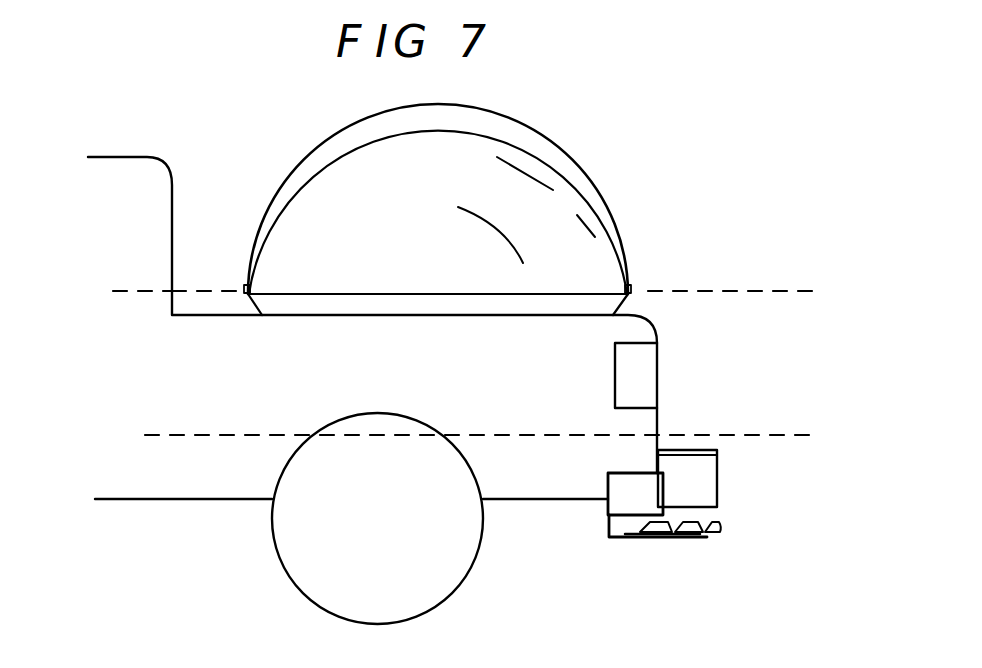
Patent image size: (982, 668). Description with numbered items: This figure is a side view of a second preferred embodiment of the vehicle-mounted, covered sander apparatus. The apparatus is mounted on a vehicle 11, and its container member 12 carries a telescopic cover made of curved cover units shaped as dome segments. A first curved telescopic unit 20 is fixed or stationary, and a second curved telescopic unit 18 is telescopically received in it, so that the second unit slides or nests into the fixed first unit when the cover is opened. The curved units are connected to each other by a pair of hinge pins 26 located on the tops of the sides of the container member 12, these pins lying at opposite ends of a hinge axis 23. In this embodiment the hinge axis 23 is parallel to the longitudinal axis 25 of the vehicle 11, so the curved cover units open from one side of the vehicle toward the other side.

The vehicle 11 is at (567, 372).
The container member 12 is at (429, 540).
The second curved telescopic unit 18 is at (500, 122).
The first curved telescopic unit 20 is at (518, 197).
The hinge axis 23 is at (750, 291).
The longitudinal axis 25 is at (798, 435).
The hinge pins 26 is at (245, 288).